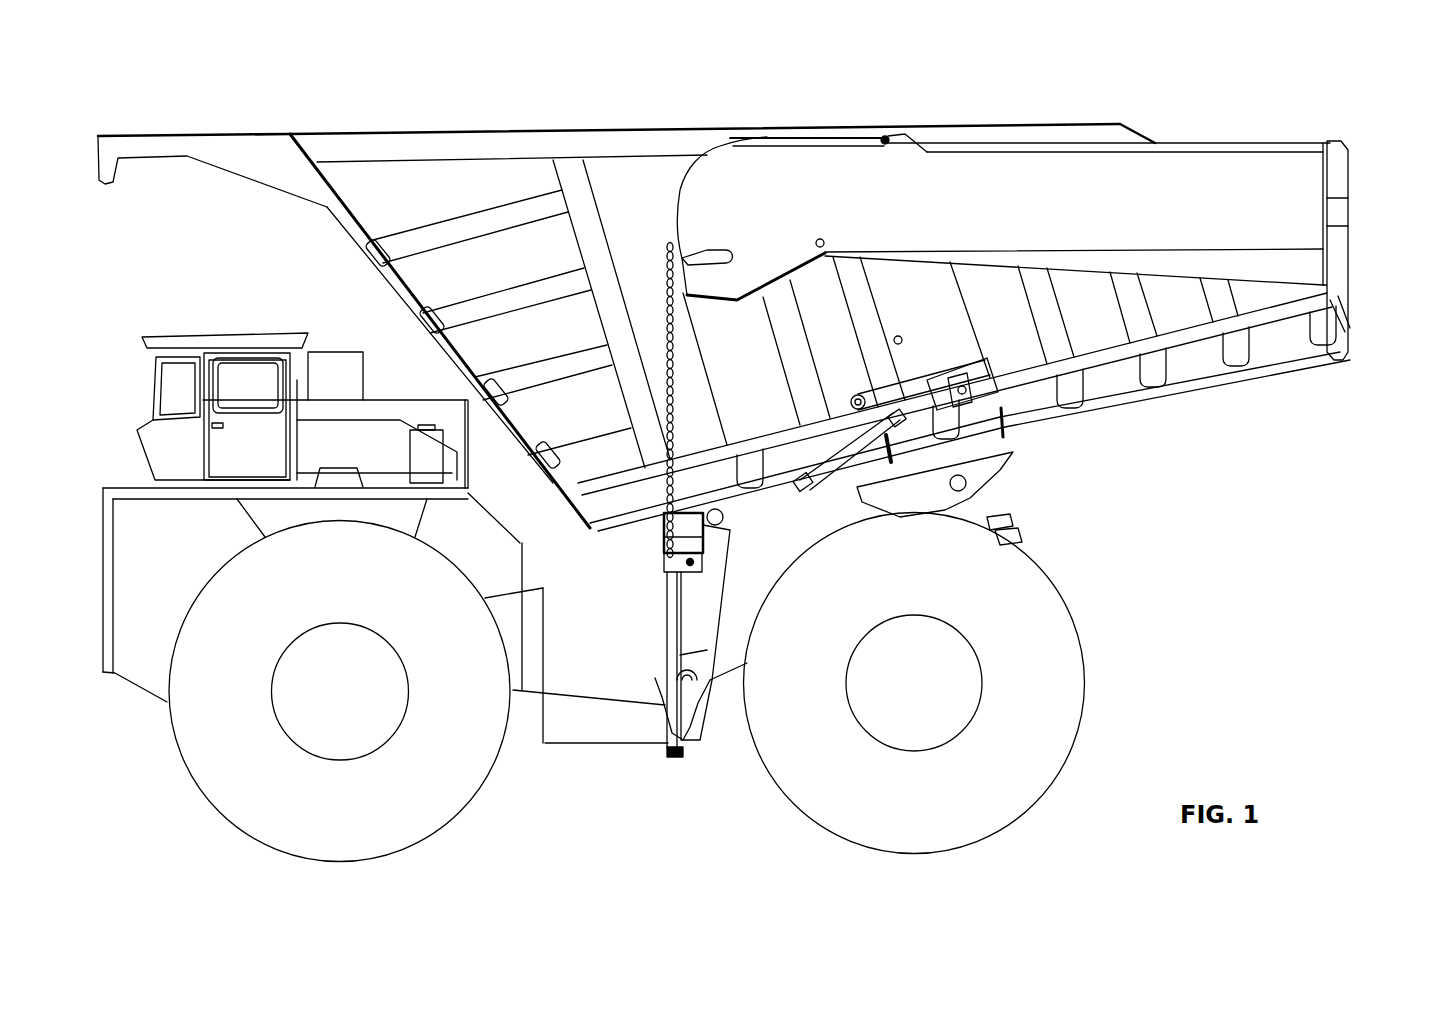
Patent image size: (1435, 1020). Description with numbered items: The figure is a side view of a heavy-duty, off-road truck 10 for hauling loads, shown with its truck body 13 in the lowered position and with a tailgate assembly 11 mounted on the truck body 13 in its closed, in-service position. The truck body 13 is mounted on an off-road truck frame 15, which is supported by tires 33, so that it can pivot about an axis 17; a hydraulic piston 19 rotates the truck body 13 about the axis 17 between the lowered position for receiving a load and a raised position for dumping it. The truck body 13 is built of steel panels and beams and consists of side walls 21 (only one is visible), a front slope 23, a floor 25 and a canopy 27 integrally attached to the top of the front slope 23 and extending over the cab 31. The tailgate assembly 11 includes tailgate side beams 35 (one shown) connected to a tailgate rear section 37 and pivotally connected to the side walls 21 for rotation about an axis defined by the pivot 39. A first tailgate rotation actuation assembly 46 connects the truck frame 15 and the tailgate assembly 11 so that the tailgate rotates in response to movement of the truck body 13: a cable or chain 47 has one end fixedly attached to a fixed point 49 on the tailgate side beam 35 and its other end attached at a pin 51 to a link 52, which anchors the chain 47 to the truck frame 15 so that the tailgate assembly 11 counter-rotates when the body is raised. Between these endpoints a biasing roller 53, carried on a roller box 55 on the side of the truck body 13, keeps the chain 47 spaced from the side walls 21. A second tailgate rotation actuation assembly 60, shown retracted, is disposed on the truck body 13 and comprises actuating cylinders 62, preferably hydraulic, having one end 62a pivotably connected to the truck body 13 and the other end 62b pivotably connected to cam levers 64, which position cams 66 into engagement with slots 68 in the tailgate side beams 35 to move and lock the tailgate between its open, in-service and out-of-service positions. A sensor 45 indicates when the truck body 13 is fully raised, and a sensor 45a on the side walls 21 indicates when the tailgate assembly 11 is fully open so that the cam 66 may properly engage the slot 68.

The heavy-duty, off-road truck 10 is at (1175, 525).
The tailgate assembly 11 is at (766, 302).
The truck body 13 is at (538, 133).
The off-road truck frame 15 is at (608, 702).
The axis 17 is at (967, 487).
The hydraulic piston 19 is at (700, 627).
The side walls 21 is at (780, 234).
The front slope 23 is at (376, 268).
The floor 25 is at (1118, 400).
The canopy 27 is at (197, 133).
The cab 31 is at (180, 336).
The tires 33 is at (223, 807).
The tailgate side beams 35 is at (1187, 160).
The tailgate rear section 37 is at (1410, 222).
The pivot 39 is at (822, 238).
The sensor 45 is at (1000, 524).
The sensor 45a is at (898, 336).
The first tailgate rotation actuation assembly 46 is at (653, 651).
The chain 47 is at (665, 335).
The fixed point 49 is at (888, 136).
The pin 51 is at (686, 580).
The link 52 is at (701, 718).
The biasing roller 53 is at (698, 560).
The roller box 55 is at (693, 530).
The second tailgate rotation actuation assembly 60 is at (1052, 458).
The actuating cylinders 62 is at (870, 493).
The end of actuating cylinder 62a is at (863, 443).
The other end of actuating cylinder 62b is at (933, 542).
The cam levers 64 is at (968, 372).
The cams 66 is at (857, 396).
The slots 68 is at (713, 247).